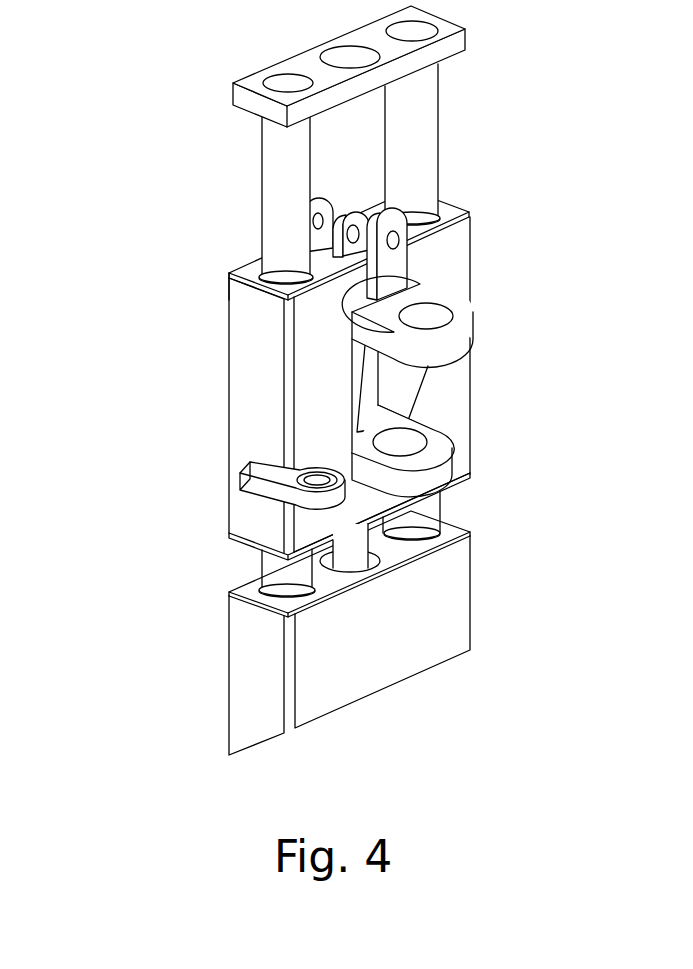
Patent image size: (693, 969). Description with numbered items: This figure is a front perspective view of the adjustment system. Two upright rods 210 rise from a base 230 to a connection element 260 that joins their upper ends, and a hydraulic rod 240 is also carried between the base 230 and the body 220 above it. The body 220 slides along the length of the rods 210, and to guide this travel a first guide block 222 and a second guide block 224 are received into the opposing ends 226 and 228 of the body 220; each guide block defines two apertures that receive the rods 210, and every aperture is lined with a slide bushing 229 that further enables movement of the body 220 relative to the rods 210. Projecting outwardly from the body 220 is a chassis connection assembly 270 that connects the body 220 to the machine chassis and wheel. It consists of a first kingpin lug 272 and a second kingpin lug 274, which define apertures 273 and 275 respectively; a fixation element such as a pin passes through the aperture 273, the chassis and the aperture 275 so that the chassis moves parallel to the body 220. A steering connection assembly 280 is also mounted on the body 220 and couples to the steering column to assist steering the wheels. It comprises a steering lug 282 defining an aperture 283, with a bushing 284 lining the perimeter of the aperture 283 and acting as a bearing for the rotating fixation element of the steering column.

The rod 210 is at (276, 182).
The body 220 is at (346, 419).
The first guide block 222 is at (230, 272).
The second guide block 224 is at (248, 543).
The first end of the body 226 is at (258, 268).
The second end of the body 228 is at (460, 465).
The slide bushing 229 is at (255, 280).
The base 230 is at (470, 632).
The hydraulic rod 240 is at (440, 560).
The connection element 260 is at (278, 64).
The chassis connection assembly 270 is at (501, 361).
The first kingpin lug 272 is at (479, 296).
The aperture of first kingpin lug 273 is at (426, 316).
The second kingpin lug 274 is at (503, 439).
The aperture of second kingpin lug 275 is at (405, 430).
The steering connection assembly 280 is at (191, 483).
The steering lug 282 is at (275, 493).
The aperture of steering lug 283 is at (317, 478).
The bushing 284 is at (240, 472).